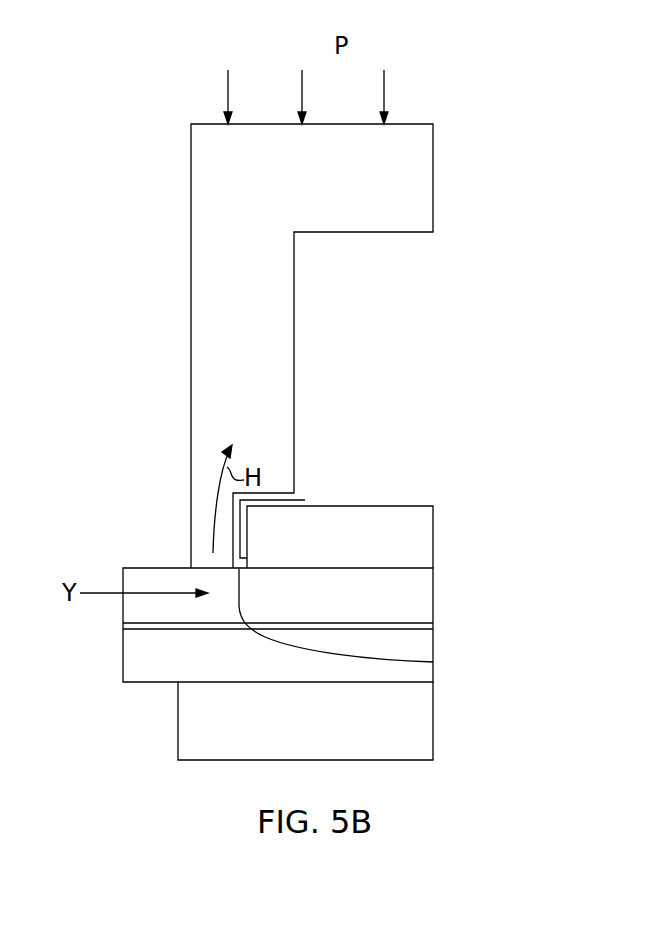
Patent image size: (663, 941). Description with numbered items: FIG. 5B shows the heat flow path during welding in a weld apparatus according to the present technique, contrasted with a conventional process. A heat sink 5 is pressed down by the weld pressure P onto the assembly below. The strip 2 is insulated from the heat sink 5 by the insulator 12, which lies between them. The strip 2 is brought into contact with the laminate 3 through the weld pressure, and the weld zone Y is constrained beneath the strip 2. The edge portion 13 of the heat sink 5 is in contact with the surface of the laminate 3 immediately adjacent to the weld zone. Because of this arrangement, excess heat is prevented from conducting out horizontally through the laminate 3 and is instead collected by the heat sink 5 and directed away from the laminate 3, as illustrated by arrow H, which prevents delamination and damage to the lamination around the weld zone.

The heat sink 5 is at (433, 202).
The strip 2 is at (433, 506).
The insulator 12 is at (305, 500).
The laminate 3 is at (433, 594).
The edge portion 13 is at (191, 566).